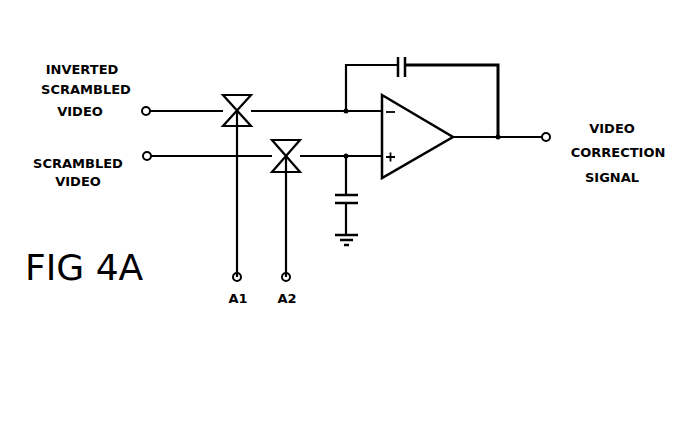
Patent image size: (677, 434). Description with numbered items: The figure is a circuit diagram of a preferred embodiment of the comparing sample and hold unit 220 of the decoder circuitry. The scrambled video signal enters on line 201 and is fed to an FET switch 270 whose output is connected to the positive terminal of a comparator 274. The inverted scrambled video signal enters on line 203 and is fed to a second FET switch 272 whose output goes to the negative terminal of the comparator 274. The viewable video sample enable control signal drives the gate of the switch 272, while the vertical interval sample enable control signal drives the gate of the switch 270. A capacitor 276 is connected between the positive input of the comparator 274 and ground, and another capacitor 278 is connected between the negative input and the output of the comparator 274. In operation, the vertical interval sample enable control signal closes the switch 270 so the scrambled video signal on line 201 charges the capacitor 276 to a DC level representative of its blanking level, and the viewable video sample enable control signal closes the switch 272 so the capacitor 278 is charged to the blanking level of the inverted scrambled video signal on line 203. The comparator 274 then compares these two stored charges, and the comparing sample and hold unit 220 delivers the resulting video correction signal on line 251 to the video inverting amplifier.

The line 203 is at (173, 111).
The line 201 is at (168, 157).
The FET switch 272 is at (241, 93).
The FET switch 270 is at (300, 163).
The capacitor 276 is at (368, 198).
The capacitor 278 is at (403, 53).
The comparator 274 is at (427, 118).
The line 251 is at (517, 135).
The comparing sample and hold unit 220 is at (512, 209).